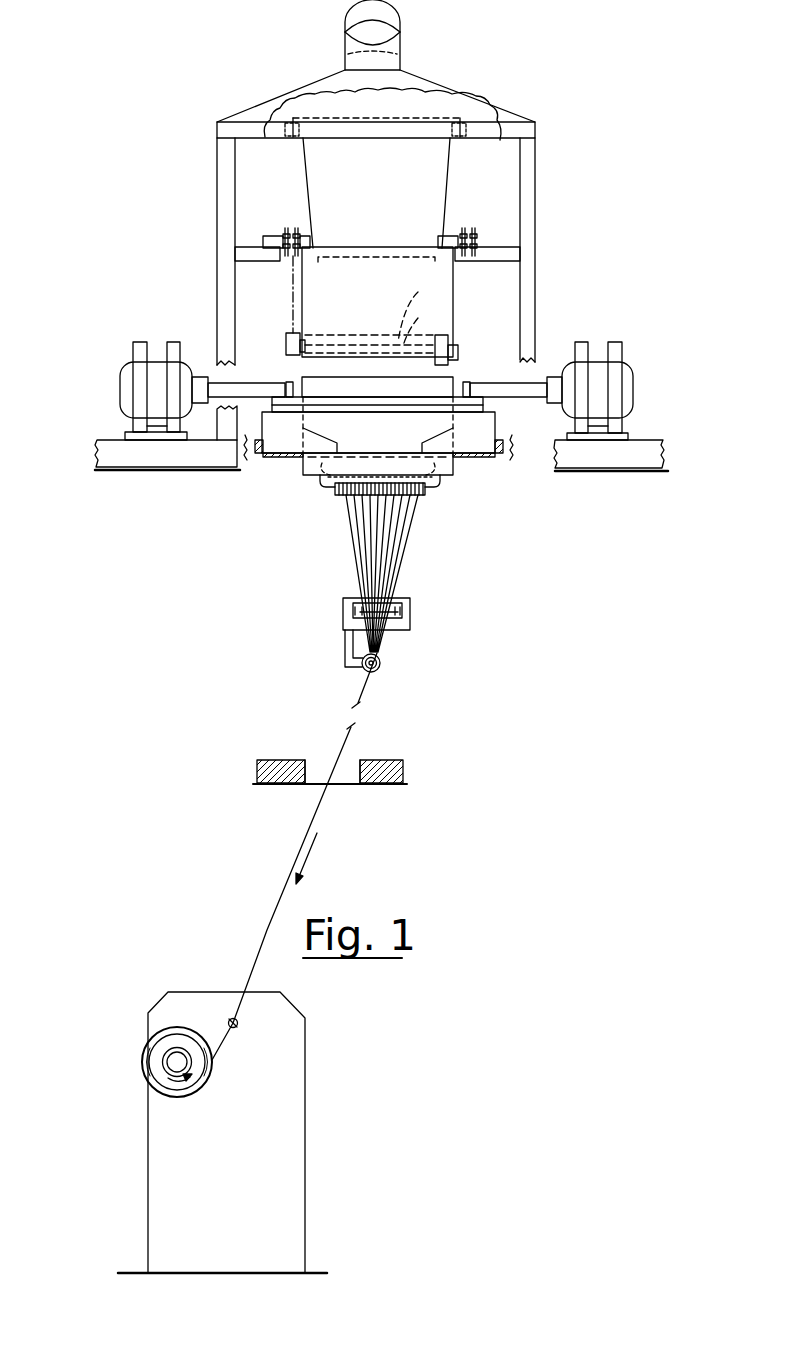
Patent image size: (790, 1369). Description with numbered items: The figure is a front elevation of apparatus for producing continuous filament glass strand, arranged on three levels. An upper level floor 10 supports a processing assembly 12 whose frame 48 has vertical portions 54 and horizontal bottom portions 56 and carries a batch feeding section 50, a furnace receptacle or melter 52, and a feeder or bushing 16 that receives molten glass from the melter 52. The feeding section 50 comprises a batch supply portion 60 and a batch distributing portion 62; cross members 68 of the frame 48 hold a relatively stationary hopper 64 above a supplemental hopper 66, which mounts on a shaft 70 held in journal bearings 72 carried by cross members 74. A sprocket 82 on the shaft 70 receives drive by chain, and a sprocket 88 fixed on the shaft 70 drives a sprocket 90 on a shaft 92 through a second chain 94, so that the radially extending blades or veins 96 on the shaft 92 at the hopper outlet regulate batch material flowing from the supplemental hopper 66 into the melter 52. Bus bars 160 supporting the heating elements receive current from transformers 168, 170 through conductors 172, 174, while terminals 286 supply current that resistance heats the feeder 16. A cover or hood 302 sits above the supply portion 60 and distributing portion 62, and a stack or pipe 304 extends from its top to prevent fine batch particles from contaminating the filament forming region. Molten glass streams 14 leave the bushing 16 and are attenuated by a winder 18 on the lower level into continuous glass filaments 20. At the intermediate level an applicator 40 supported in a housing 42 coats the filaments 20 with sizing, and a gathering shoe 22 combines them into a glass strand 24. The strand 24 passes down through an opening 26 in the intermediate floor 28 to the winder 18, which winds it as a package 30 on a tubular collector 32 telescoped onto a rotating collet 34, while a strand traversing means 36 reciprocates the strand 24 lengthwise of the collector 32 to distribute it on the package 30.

The upper level floor 10 is at (108, 438).
The processing assembly 12 is at (534, 95).
The molten glass streams 14 is at (333, 484).
The feeder or bushing 16 is at (305, 462).
The winder 18 is at (219, 982).
The continuous glass filaments 20 is at (377, 557).
The gathering shoe 22 is at (363, 668).
The glass strand 24 is at (278, 897).
The opening 26 is at (320, 768).
The intermediate floor 28 is at (267, 759).
The package 30 is at (158, 1030).
The tubular collector 32 is at (160, 1067).
The collet 34 is at (167, 1075).
The strand traversing means 36 is at (270, 1043).
The applicator 40 is at (360, 608).
The housing 42 is at (352, 597).
The frame 48 is at (542, 167).
The batch feeding section 50 is at (493, 294).
The furnace receptacle or melter 52 is at (305, 378).
The vertical portions 54 is at (538, 218).
The horizontal bottom portions 56 is at (253, 458).
The batch supply portion 60 is at (296, 162).
The batch distributing portion 62 is at (276, 300).
The relatively stationary hopper 64 is at (395, 157).
The supplemental hopper 66 is at (455, 282).
The cross members 68 is at (328, 128).
The shaft 70 is at (500, 208).
The journal bearings 72 is at (278, 236).
The cross members 74 is at (250, 247).
The sprocket 82 is at (285, 233).
The sprocket 88 is at (296, 232).
The sprocket 90 is at (288, 340).
The shaft 92 is at (425, 325).
The second chain 94 is at (291, 290).
The blades or veins 96 is at (422, 311).
The bus bars 160 is at (356, 398).
The transformer 168 is at (130, 362).
The transformer 170 is at (627, 362).
The conductor 172 is at (222, 386).
The conductor 174 is at (495, 381).
The terminals 286 is at (327, 481).
The cover or hood 302 is at (417, 77).
The stack or pipe 304 is at (401, 30).